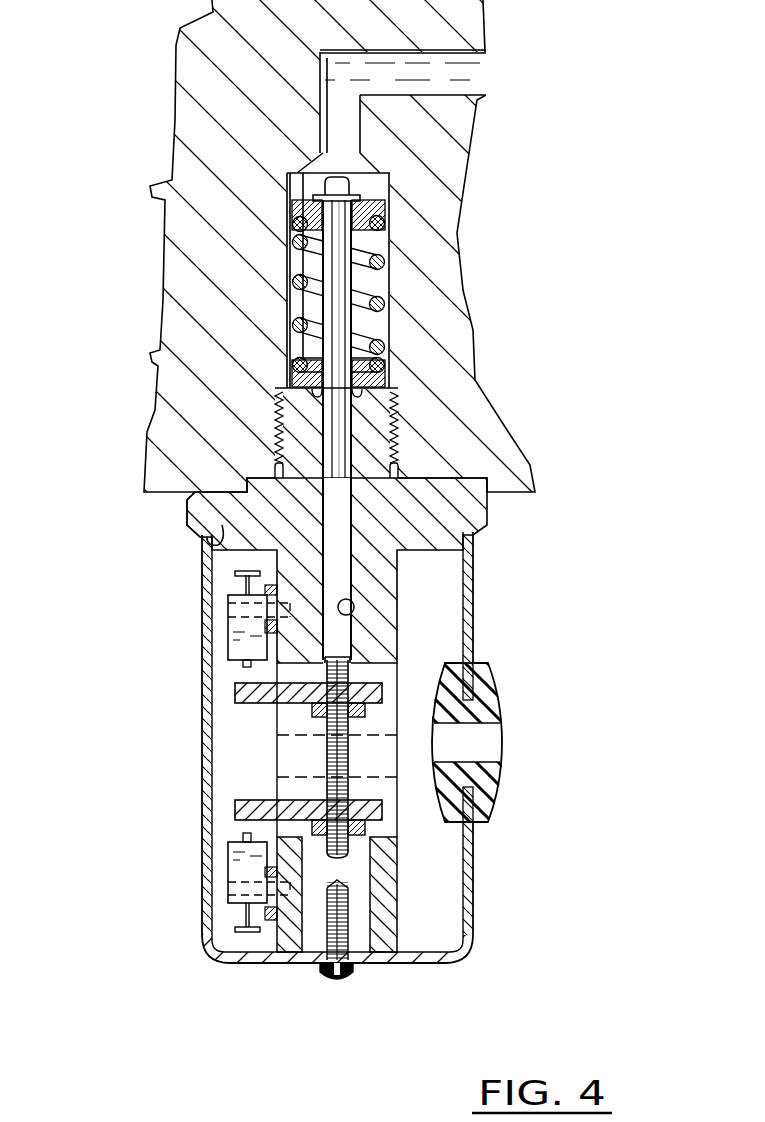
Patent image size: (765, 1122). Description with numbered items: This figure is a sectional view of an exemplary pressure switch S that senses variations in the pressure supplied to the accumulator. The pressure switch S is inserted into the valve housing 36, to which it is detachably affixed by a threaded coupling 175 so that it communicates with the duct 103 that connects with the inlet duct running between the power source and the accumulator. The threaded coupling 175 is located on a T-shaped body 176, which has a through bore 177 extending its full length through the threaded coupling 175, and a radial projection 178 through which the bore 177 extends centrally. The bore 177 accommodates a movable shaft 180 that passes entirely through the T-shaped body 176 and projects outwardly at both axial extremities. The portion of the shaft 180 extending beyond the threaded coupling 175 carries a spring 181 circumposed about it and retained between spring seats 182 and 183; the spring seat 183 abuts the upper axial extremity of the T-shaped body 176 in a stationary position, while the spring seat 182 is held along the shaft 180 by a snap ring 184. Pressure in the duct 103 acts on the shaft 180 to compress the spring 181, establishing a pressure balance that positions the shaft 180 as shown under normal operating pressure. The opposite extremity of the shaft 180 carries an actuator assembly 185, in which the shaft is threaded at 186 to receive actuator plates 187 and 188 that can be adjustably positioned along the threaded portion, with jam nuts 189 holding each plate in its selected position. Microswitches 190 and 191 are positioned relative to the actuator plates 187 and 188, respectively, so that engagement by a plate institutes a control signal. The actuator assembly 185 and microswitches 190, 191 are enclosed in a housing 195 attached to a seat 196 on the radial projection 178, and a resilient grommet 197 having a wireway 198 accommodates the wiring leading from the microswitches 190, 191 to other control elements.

The pressure switch S is at (118, 600).
The valve housing 36 is at (182, 315).
The duct 103 is at (420, 92).
The threaded coupling 175 is at (393, 420).
The T-shaped body 176 is at (470, 512).
The through bore 177 is at (348, 617).
The radial projection 178 is at (195, 507).
The movable shaft 180 is at (340, 282).
The spring 181 is at (313, 238).
The spring seat 182 is at (310, 213).
The spring seat 183 is at (287, 375).
The snap ring 184 is at (357, 197).
The actuator assembly 185 is at (293, 712).
The threaded portion 186 is at (380, 673).
The actuator plate 187 is at (240, 693).
The actuator plate 188 is at (247, 808).
The jam nuts 189 is at (307, 708).
The microswitch 190 is at (237, 642).
The microswitch 191 is at (237, 868).
The housing 195 is at (208, 594).
The seat 196 is at (222, 521).
The resilient grommet 197 is at (488, 715).
The wireway 198 is at (467, 764).